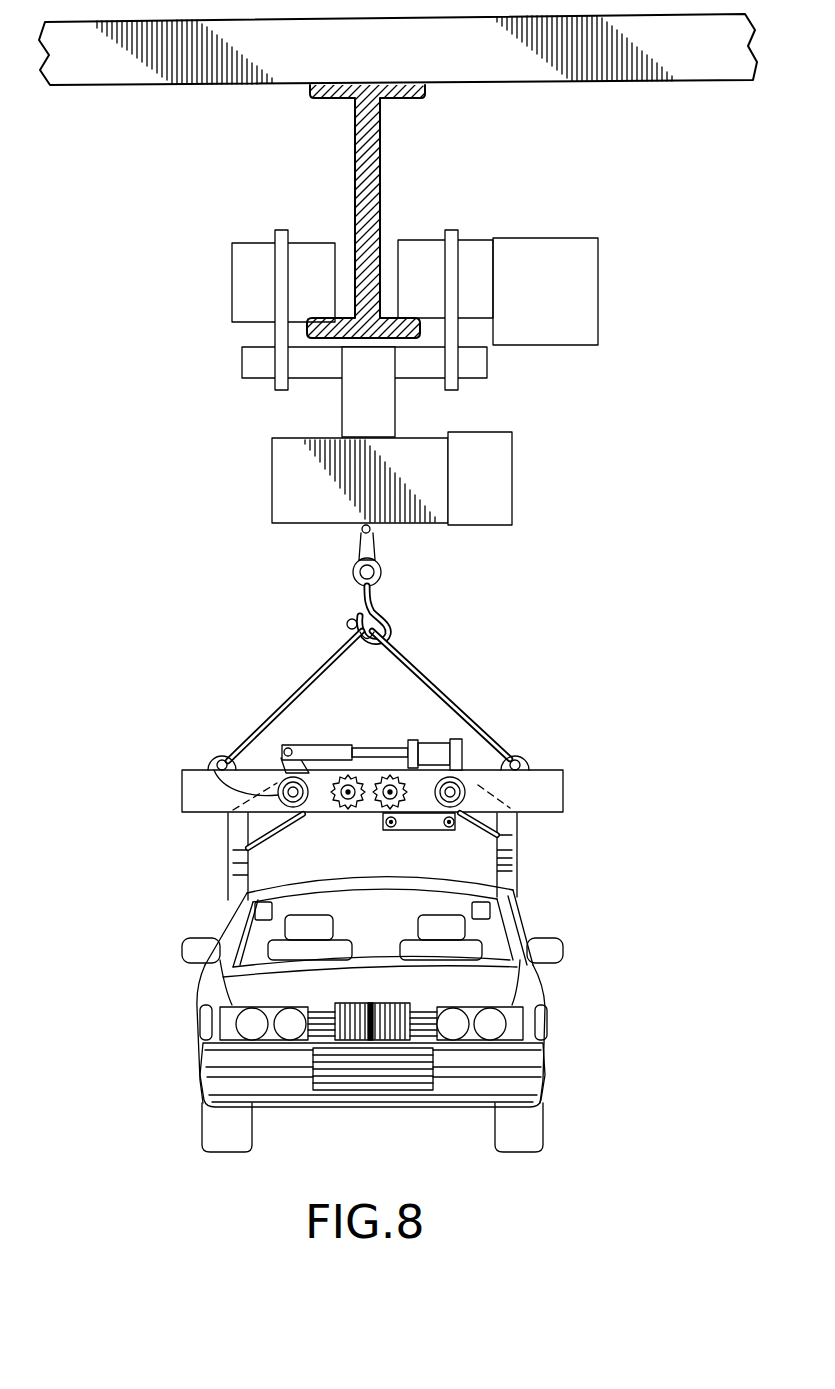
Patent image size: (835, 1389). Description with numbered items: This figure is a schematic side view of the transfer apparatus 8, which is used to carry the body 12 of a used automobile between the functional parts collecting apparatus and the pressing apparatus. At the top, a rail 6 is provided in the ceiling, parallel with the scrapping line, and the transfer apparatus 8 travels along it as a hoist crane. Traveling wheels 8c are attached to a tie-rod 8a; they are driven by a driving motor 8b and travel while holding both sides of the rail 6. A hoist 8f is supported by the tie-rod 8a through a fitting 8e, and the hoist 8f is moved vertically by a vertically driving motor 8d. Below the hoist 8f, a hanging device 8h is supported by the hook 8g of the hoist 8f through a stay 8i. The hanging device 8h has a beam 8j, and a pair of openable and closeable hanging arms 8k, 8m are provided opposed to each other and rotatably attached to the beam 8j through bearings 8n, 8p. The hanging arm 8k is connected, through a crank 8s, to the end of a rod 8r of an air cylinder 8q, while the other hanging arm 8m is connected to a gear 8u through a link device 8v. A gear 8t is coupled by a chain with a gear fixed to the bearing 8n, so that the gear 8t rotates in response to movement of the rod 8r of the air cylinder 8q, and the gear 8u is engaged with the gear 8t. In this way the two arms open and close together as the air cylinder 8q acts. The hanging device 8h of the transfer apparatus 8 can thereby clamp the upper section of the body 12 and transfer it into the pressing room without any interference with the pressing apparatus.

The rail 6 is at (371, 157).
The transfer apparatus 8 is at (385, 404).
The tie-rod 8a is at (240, 368).
The driving motor 8b is at (590, 298).
The traveling wheels 8c is at (312, 248).
The vertically driving motor 8d is at (500, 470).
The fitting 8e is at (382, 405).
The hoist 8f is at (280, 497).
The hook 8g is at (388, 614).
The hanging device 8h is at (405, 768).
The stay 8i is at (437, 682).
The beam 8j is at (557, 788).
The hanging arm 8k is at (233, 822).
The hanging arm 8m is at (517, 847).
The bearing 8n is at (213, 765).
The bearing 8p is at (470, 784).
The air cylinder 8q is at (433, 747).
The rod 8r is at (323, 745).
The crank 8s is at (282, 768).
The gear 8t is at (303, 814).
The gear 8u is at (350, 813).
The link device 8v is at (417, 832).
The body 12 is at (370, 1030).